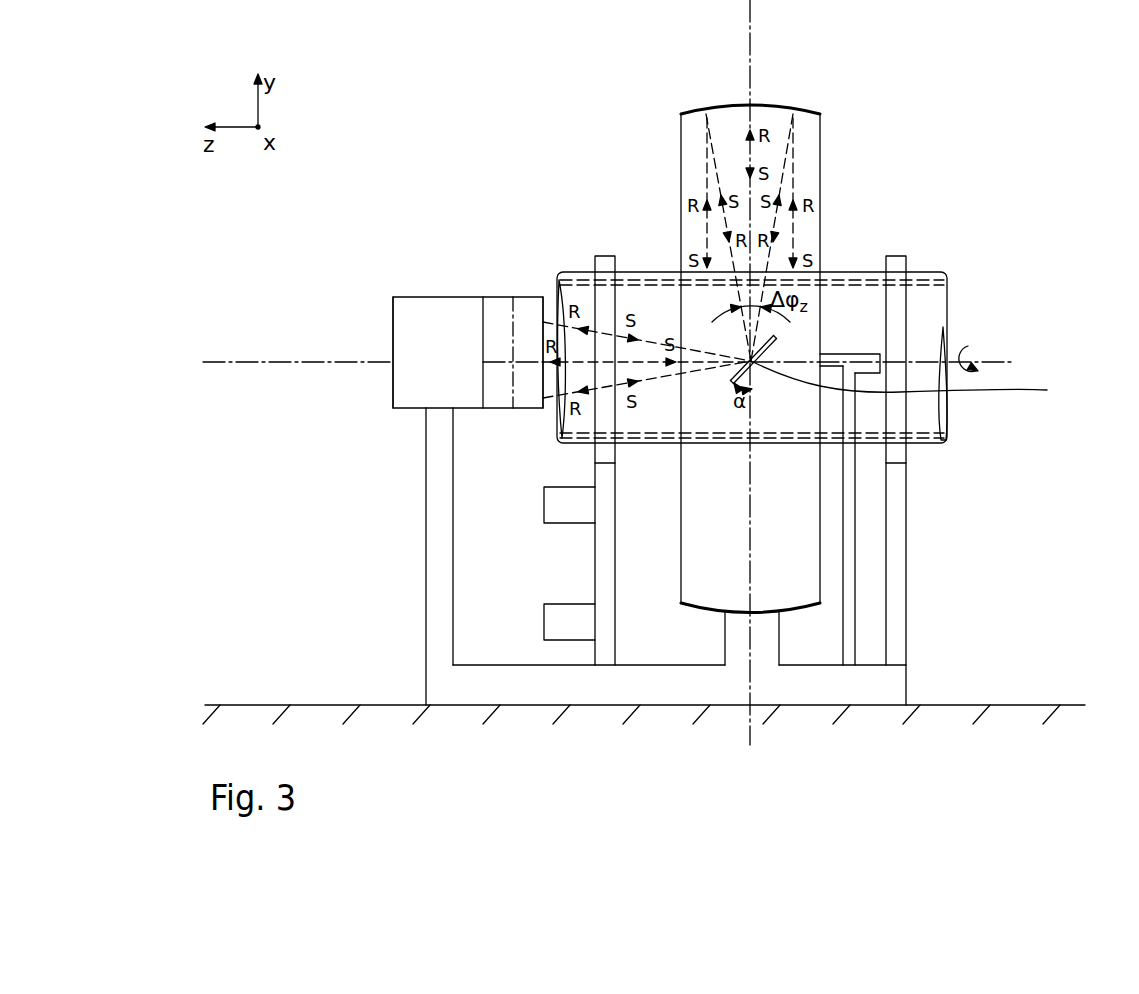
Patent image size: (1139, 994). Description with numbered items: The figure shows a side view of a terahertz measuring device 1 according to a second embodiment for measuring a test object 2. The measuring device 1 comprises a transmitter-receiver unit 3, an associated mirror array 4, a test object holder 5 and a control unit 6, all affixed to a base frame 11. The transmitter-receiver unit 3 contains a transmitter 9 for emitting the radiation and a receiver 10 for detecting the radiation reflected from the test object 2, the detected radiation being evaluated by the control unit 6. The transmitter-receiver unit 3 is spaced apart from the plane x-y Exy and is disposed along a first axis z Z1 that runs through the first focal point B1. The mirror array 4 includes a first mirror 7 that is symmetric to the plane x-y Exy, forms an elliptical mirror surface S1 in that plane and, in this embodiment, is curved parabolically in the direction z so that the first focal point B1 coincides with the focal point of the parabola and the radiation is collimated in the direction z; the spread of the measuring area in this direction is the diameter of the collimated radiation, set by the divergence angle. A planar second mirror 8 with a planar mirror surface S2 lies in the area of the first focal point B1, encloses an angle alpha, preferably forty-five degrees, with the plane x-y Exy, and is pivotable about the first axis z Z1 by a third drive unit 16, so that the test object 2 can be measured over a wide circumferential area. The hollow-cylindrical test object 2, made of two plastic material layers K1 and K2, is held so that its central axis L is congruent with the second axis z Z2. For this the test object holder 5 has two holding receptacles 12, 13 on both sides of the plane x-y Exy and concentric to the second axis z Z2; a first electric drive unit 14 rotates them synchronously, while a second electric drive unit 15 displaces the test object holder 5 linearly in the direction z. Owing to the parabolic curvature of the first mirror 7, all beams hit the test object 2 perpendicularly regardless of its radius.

The measuring device 1 is at (446, 84).
The test object 2 is at (819, 335).
The transmitter-receiver unit 3 is at (473, 299).
The mirror array 4 is at (838, 513).
The test object holder 5 is at (613, 428).
The control unit 6 is at (441, 300).
The first mirror 7 is at (822, 565).
The second mirror 8 is at (881, 385).
The transmitter 9 is at (531, 300).
The receiver 10 is at (491, 300).
The base frame 11 is at (897, 675).
The holding receptacle 12 is at (605, 265).
The holding receptacle 13 is at (890, 256).
The first electric drive unit 14 is at (552, 509).
The second electric drive unit 15 is at (552, 625).
The third drive unit 16 is at (945, 428).
The mirror surface S1 is at (767, 608).
The planar mirror surface S2 is at (751, 361).
The first axis z Z1 is at (333, 364).
The second axis z Z2 is at (917, 358).
The central axis L is at (993, 358).
The first focal point B1 is at (916, 384).
The material layer K1 is at (947, 440).
The material layer K2 is at (945, 436).
The plane x-y Exy is at (748, 70).